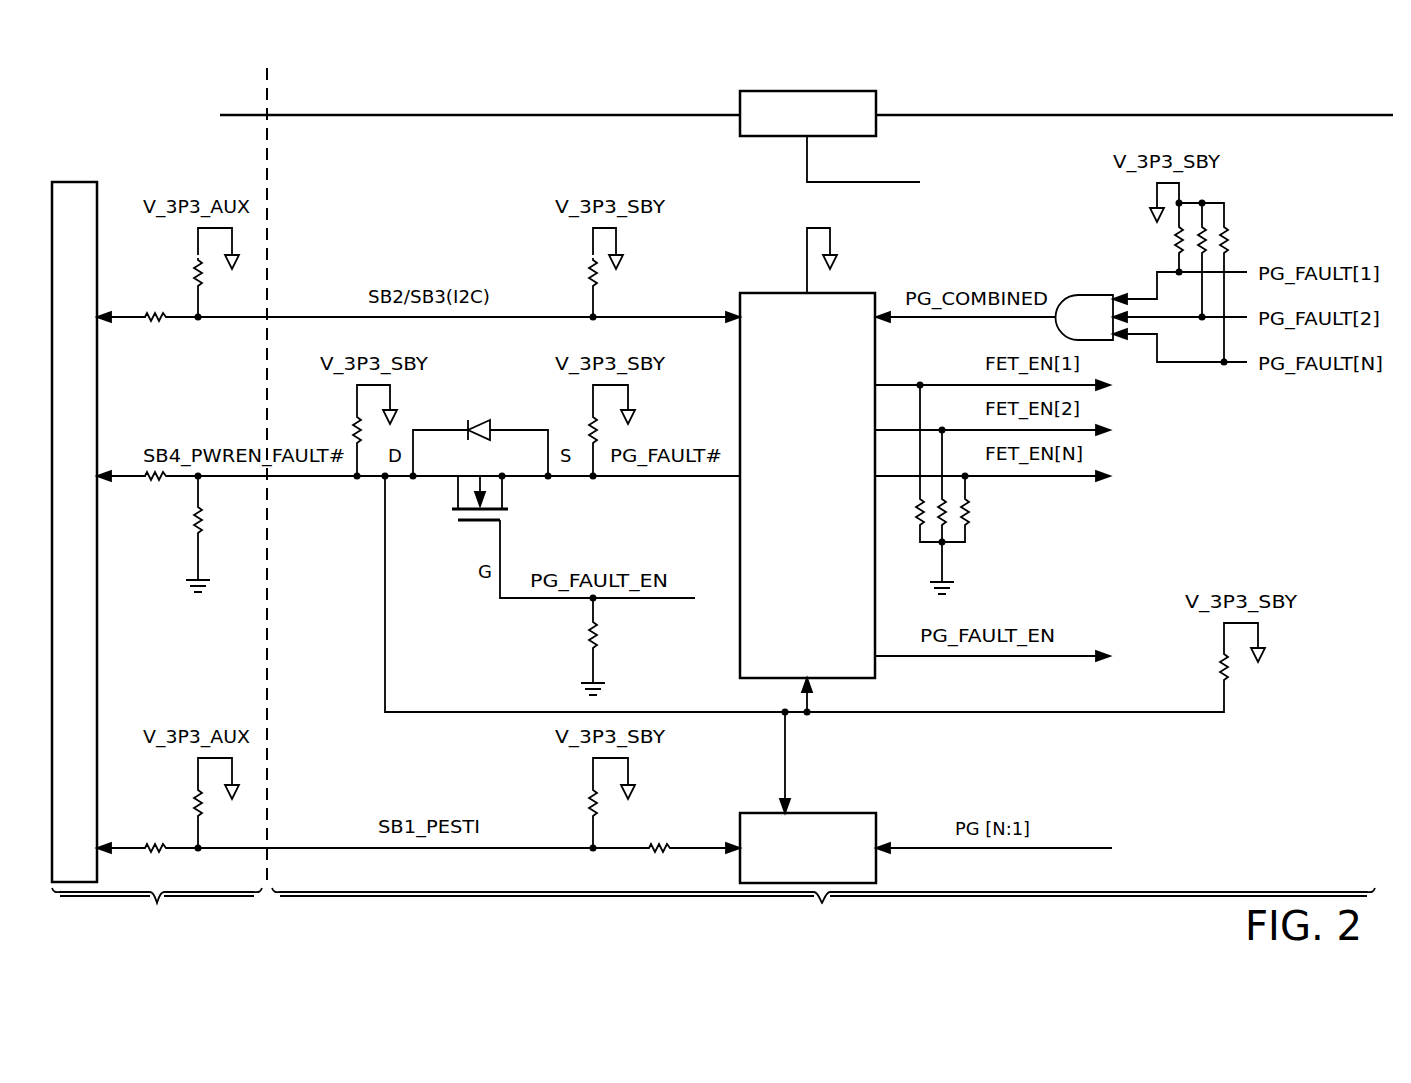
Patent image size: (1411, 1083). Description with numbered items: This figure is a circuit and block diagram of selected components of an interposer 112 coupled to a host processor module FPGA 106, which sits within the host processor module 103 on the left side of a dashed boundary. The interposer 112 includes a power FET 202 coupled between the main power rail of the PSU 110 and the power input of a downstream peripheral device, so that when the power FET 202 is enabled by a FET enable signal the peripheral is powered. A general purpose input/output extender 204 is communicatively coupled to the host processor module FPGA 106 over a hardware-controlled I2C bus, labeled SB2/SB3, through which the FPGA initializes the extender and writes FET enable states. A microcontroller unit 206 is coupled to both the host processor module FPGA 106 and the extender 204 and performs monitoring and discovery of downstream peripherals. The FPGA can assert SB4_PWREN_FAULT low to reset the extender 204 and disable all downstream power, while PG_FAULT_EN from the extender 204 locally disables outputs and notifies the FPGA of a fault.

The PSU 110 is at (142, 102).
The host processor module FPGA 106 is at (76, 182).
The power field-effect transistor 202 is at (878, 98).
The general purpose input/output extender 204 is at (828, 417).
The microcontroller unit 206 is at (852, 813).
The host processor module 103 is at (157, 938).
The interposer 112 is at (823, 925).